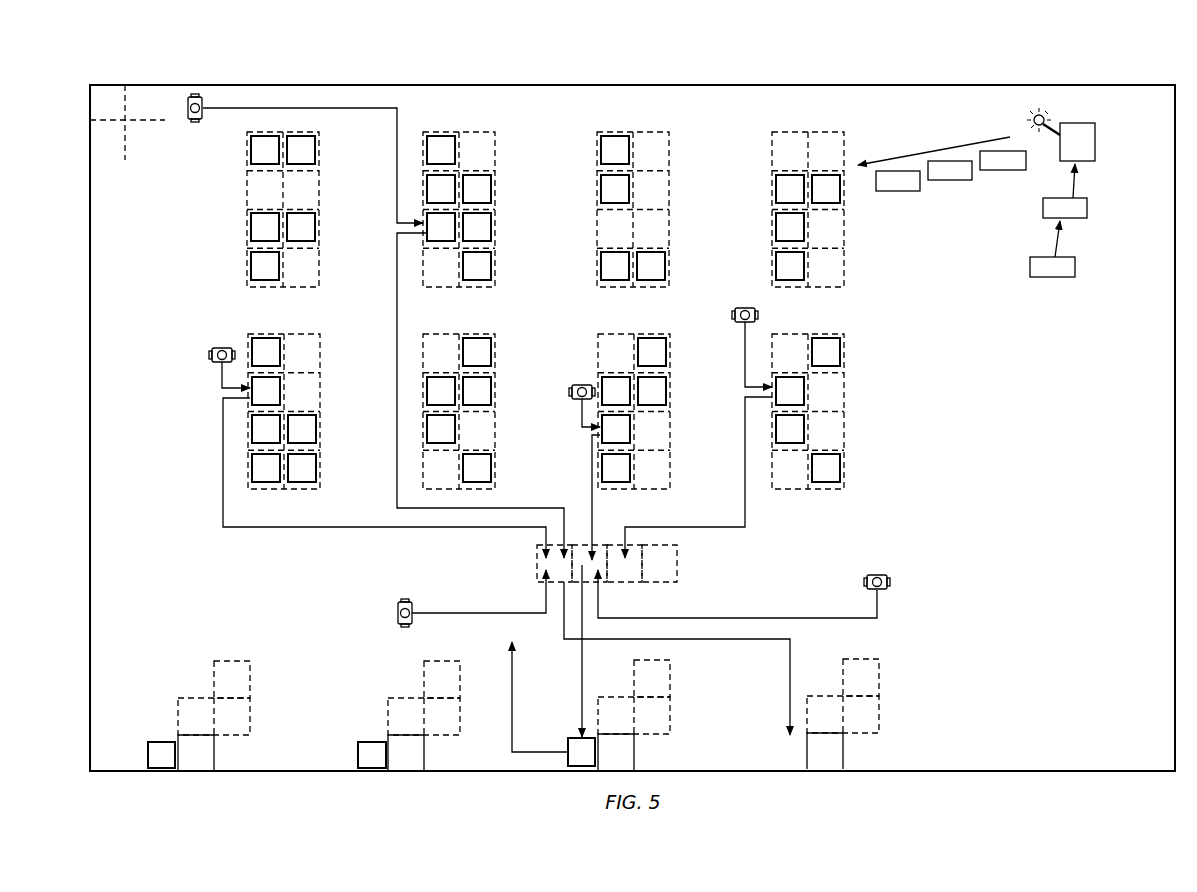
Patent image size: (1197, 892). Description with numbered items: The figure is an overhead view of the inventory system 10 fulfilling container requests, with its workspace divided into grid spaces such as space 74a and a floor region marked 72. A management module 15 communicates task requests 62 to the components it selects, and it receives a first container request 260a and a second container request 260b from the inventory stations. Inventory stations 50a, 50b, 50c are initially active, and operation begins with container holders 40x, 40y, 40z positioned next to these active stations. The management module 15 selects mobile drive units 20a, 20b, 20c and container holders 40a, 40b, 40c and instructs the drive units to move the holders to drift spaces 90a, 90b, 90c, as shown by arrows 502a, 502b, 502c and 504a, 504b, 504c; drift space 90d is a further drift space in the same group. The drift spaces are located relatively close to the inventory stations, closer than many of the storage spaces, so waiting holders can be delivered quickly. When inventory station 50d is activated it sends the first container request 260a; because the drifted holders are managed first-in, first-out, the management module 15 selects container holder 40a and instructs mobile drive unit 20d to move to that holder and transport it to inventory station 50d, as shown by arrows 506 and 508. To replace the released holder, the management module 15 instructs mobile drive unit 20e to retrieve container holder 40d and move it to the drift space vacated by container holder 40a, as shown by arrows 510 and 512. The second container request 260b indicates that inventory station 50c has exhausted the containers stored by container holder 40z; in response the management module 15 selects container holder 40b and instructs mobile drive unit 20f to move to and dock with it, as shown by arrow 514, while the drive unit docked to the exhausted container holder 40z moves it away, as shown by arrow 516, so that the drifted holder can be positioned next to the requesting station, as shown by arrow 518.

The inventory system 10 is at (285, 68).
The space 74a is at (113, 97).
The mobile drive unit 20e is at (195, 122).
The mobile drive unit 20a is at (212, 355).
The mobile drive unit 20b is at (582, 385).
The mobile drive unit 20c is at (755, 315).
The mobile drive unit 20d is at (398, 613).
The mobile drive unit 20f is at (880, 572).
The arrow 510 is at (397, 165).
The arrow 512 is at (397, 324).
The container holder 40d is at (441, 241).
The container holder 40a is at (282, 395).
The container holder 40b is at (632, 428).
The container holder 40c is at (805, 392).
The container holder 40x is at (163, 742).
The container holder 40y is at (358, 750).
The container holder 40z is at (572, 760).
The arrow 502a is at (222, 384).
The arrow 502b is at (582, 420).
The arrow 502c is at (745, 356).
The arrow 504a is at (223, 458).
The arrow 504b is at (592, 470).
The arrow 504c is at (745, 472).
The arrow 506 is at (465, 613).
The arrow 508 is at (735, 640).
The arrow 514 is at (877, 606).
The arrow 516 is at (512, 680).
The arrow 518 is at (582, 715).
The drift space 90a is at (537, 562).
The drift space 90b is at (598, 548).
The drift space 90c is at (632, 572).
The drift space 90d is at (677, 565).
The inventory station 50a is at (214, 753).
The inventory station 50b is at (424, 753).
The inventory station 50c is at (633, 752).
The inventory station 50d is at (843, 750).
The management module 15 is at (1066, 154).
The task request 62 is at (898, 191).
The first container request 260a is at (1087, 203).
The second container request 260b is at (1075, 266).
The floor 72 is at (1036, 544).